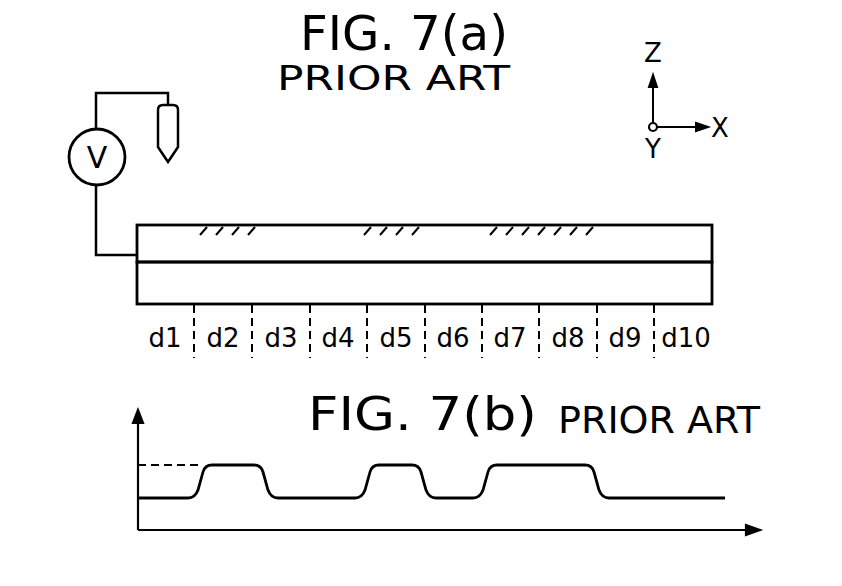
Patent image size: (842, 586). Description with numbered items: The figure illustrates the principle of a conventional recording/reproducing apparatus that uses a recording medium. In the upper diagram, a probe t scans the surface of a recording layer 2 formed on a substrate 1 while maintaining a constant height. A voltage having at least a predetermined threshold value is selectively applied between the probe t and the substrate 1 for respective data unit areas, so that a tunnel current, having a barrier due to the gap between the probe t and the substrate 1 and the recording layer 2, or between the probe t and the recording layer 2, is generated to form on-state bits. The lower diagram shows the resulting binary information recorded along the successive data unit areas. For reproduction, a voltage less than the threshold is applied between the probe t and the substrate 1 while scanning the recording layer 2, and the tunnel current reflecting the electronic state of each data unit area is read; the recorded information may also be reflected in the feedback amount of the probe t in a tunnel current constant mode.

The substrate 1 is at (137, 290).
The recording layer 2 is at (137, 260).
The probe t is at (173, 131).